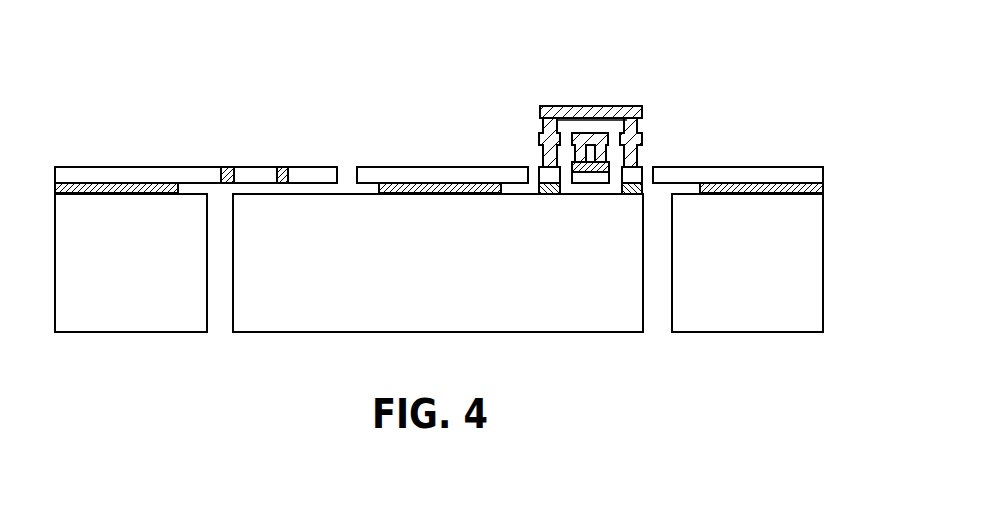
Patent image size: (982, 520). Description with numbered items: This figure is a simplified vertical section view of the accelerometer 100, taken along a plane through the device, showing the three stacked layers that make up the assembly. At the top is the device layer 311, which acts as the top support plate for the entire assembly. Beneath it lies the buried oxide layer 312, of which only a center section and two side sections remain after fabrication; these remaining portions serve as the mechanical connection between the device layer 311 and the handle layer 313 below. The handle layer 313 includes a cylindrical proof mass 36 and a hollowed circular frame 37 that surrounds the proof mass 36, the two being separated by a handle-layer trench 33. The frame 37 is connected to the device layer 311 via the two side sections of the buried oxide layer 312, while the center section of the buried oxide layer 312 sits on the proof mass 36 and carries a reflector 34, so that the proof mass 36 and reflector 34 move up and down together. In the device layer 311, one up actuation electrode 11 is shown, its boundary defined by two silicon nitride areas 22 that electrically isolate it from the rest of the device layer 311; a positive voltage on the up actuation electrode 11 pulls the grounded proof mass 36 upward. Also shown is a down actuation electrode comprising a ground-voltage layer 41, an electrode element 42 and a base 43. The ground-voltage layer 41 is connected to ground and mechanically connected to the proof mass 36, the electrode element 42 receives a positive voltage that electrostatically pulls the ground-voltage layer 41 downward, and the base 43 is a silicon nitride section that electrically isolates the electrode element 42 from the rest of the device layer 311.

The accelerometer 100 is at (717, 88).
The up actuation electrode 11 is at (253, 170).
The silicon nitride area 22 is at (283, 167).
The reflector 34 is at (398, 167).
The ground-voltage layer 41 is at (592, 105).
The electrode element 42 is at (575, 123).
The base 43 is at (575, 162).
The device layer 311 is at (827, 90).
The buried oxide layer 312 is at (823, 186).
The handle layer 313 is at (827, 195).
The handle-layer trench 33 is at (653, 316).
The proof mass 36 is at (388, 323).
The frame 37 is at (120, 323).